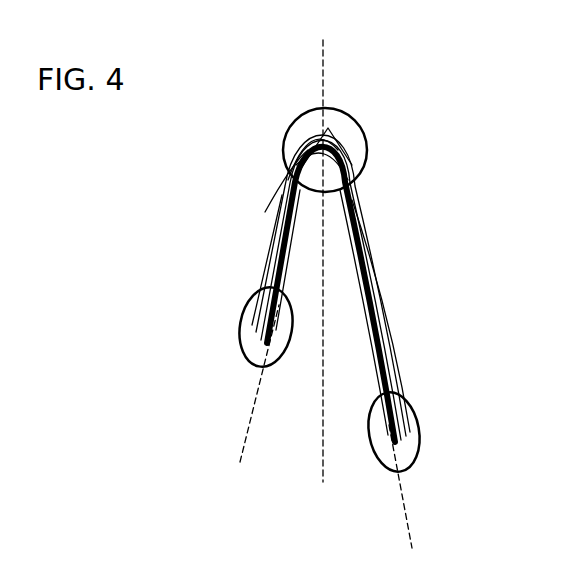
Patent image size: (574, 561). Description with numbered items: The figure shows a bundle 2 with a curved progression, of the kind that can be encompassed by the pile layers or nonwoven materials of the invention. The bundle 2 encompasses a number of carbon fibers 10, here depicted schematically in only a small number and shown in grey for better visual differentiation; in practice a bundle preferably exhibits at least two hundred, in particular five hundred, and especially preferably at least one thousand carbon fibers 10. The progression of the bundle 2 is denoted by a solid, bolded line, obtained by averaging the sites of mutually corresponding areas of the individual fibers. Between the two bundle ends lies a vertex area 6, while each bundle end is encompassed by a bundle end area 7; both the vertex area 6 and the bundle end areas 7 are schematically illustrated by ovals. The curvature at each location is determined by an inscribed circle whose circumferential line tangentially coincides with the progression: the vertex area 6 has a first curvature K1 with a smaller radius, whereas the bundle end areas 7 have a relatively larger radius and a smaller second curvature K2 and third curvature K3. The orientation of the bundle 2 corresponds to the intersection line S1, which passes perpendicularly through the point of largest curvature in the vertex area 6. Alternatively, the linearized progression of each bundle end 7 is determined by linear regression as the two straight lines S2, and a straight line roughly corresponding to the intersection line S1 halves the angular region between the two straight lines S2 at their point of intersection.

The bundle 2 is at (341, 278).
The vertex area 6 is at (360, 119).
The bundle end area 7 is at (288, 350).
The carbon fiber 10 is at (263, 257).
The first curvature K1 is at (320, 137).
The second curvature K2 is at (258, 284).
The third curvature K3 is at (395, 392).
The intersection line S1 is at (351, 261).
The straight line S2 is at (329, 426).